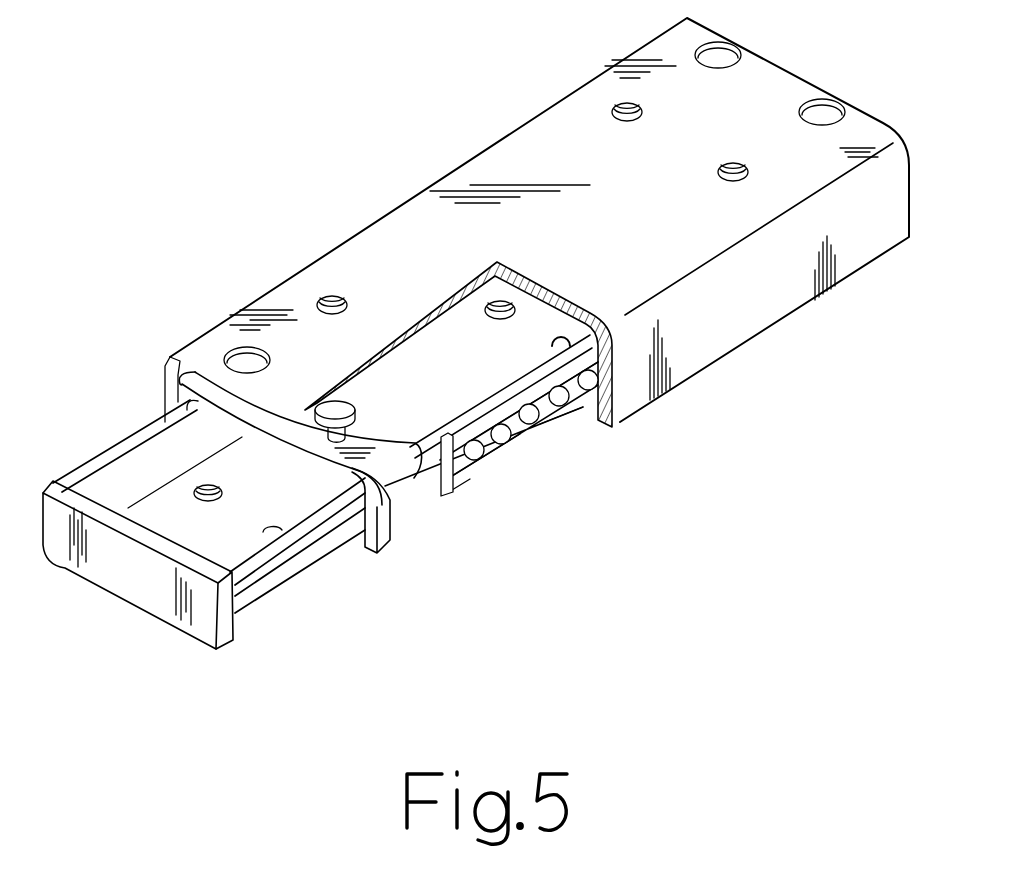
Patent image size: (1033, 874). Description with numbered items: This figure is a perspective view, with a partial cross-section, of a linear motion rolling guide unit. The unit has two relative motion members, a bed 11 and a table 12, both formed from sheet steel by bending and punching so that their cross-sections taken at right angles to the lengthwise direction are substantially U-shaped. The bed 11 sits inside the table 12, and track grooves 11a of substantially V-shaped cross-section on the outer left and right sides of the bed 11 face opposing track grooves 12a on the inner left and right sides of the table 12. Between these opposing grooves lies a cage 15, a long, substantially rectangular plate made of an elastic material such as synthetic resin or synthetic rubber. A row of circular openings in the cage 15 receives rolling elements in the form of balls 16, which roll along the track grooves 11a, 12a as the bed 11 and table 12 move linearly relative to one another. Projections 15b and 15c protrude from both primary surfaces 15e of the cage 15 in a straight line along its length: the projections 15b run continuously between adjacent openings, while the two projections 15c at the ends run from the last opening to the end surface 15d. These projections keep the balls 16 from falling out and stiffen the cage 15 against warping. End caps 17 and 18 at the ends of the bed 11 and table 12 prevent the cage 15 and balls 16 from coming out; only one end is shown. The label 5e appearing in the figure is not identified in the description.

The ball retaining portion 5e is at (428, 434).
The bed 11 is at (177, 515).
The track grooves 11a is at (414, 478).
The table 12 is at (543, 168).
The track grooves 12a is at (625, 418).
The cage 15 is at (491, 492).
The projections 15b is at (494, 446).
The projections 15c is at (460, 488).
The end surface 15d is at (442, 494).
The primary surfaces 15e is at (583, 407).
The balls 16 is at (552, 432).
The end cap 17 is at (160, 590).
The end cap 18 is at (194, 385).